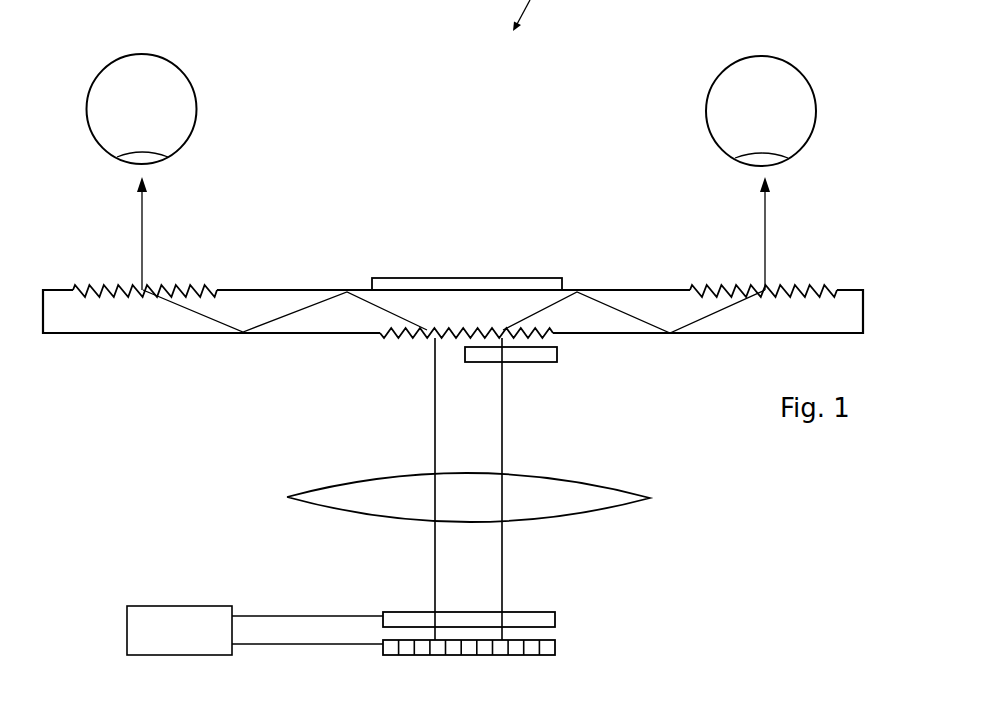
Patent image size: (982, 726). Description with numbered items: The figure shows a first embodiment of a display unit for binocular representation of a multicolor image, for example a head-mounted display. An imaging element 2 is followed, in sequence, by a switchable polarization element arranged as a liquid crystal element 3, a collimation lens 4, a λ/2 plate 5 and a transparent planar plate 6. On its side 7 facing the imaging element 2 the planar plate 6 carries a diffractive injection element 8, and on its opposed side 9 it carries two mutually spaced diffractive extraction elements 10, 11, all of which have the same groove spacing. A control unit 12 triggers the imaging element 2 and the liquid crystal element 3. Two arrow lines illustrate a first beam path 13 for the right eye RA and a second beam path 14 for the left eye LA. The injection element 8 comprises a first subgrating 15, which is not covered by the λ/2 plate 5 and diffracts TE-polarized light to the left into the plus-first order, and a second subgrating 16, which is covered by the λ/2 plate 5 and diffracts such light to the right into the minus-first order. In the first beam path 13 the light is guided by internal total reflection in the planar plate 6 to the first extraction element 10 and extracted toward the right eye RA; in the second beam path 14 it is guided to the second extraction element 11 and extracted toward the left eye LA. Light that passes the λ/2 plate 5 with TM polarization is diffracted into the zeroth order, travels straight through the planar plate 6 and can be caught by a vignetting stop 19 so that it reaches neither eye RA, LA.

The imaging element 2 is at (555, 640).
The liquid crystal element 3 is at (555, 613).
The collimation lens 4 is at (637, 488).
The λ/2 plate 5 is at (566, 355).
The transparent planar plate 6 is at (160, 338).
The side facing the imaging element 7 is at (213, 334).
The diffractive injection element 8 is at (404, 346).
The side opposed from the imaging element 9 is at (285, 288).
The first extraction element 10 is at (220, 274).
The second extraction element 11 is at (687, 276).
The control unit 12 is at (182, 606).
The first beam path 13 is at (143, 230).
The second beam path 14 is at (763, 232).
The first subgrating 15 is at (393, 331).
The second subgrating 16 is at (547, 331).
The vignetting stop 19 is at (443, 277).
The right eye RA is at (198, 102).
The left eye LA is at (705, 105).